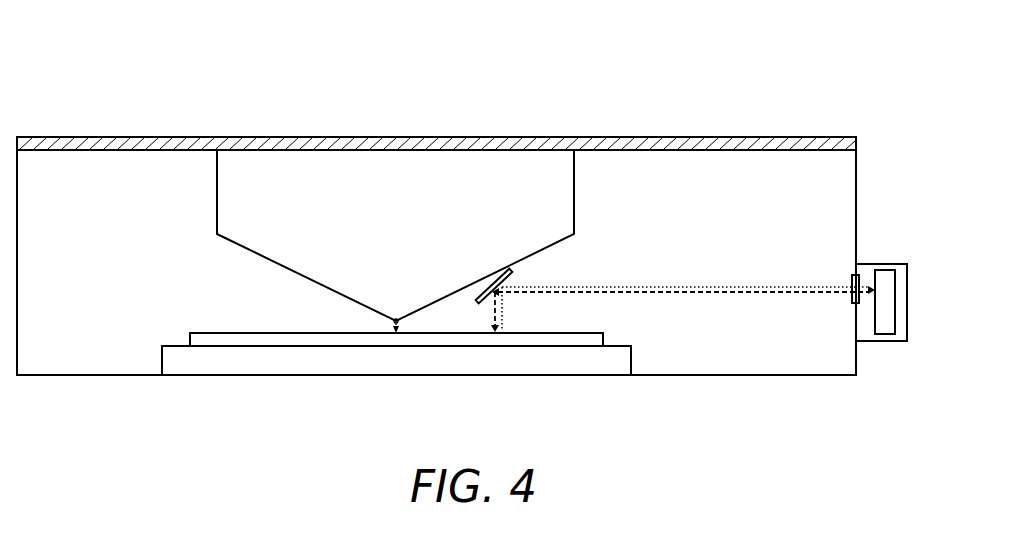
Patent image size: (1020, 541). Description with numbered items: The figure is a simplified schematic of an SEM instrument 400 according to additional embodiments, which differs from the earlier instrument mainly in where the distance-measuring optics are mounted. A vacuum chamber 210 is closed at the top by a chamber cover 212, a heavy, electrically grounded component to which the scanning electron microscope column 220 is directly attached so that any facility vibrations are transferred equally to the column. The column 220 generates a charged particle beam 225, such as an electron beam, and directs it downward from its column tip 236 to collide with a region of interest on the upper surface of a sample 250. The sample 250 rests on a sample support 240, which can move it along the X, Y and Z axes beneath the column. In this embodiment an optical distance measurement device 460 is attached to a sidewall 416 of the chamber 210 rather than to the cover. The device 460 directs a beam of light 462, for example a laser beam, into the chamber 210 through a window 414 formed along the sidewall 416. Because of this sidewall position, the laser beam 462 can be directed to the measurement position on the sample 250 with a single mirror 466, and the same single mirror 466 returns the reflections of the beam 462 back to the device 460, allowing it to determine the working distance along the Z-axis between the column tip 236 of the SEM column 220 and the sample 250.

The SEM instrument 400 is at (221, 56).
The vacuum chamber 210 is at (77, 362).
The chamber cover 212 is at (40, 137).
The scanning electron microscope column 220 is at (400, 165).
The column tip 236 is at (413, 300).
The charged particle beam 225 is at (393, 323).
The sample support 240 is at (415, 367).
The sample 250 is at (188, 340).
The single mirror 466 is at (512, 274).
The beam of light 462 is at (667, 288).
The sidewall 416 is at (855, 219).
The window 414 is at (852, 277).
The optical distance measurement device 460 is at (872, 264).